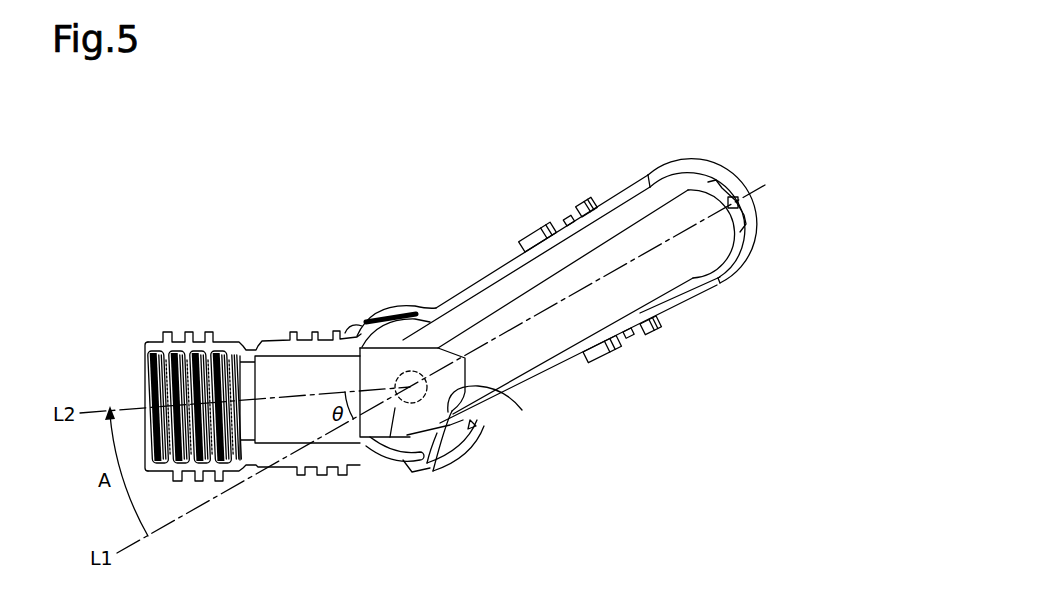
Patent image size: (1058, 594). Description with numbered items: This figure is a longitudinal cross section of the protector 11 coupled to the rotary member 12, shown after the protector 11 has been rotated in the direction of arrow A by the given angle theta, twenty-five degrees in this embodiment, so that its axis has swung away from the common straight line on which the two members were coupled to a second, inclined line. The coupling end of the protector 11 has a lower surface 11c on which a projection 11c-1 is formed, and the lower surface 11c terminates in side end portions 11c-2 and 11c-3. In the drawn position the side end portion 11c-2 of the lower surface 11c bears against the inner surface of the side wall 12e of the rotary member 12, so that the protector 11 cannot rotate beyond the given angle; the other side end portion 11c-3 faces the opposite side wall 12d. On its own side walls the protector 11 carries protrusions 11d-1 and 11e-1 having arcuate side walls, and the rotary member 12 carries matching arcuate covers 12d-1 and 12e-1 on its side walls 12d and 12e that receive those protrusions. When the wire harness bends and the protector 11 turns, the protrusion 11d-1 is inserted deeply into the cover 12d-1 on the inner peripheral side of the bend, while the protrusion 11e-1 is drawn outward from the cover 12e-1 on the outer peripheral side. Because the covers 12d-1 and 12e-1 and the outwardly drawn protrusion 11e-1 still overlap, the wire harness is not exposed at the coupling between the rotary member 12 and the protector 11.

The protector 11 is at (278, 326).
The lower surface 11c is at (382, 446).
The projection 11c-1 is at (412, 368).
The side end portion 11c-2 is at (500, 392).
The side end portion 11c-3 is at (472, 340).
The protrusion 11d-1 is at (347, 330).
The protrusion 11e-1 is at (417, 464).
The rotary member 12 is at (580, 285).
The side wall 12d is at (386, 308).
The cover 12d-1 is at (365, 322).
The side wall 12e is at (498, 430).
The cover 12e-1 is at (480, 450).